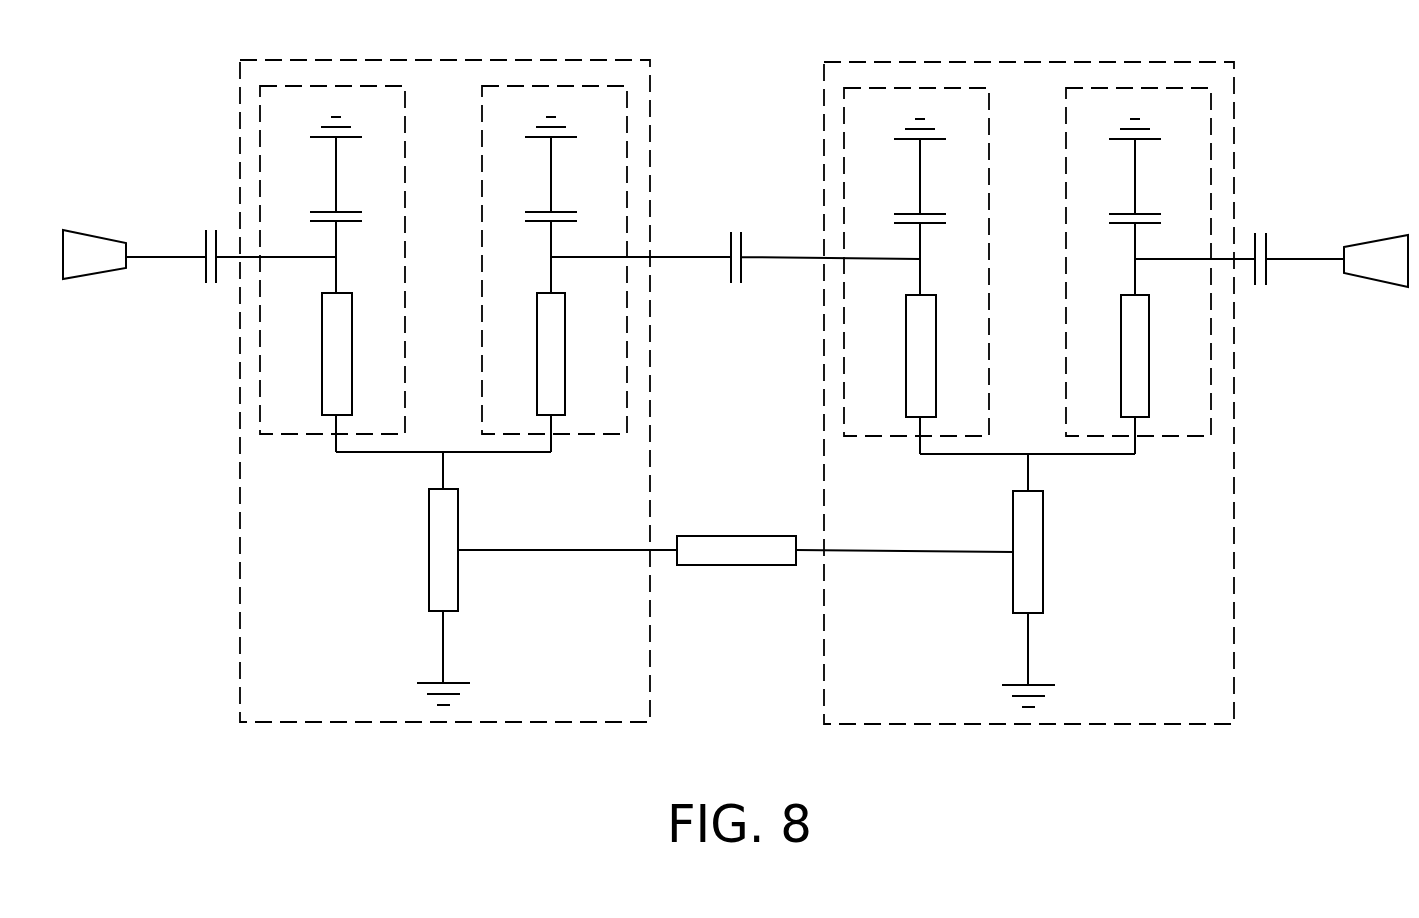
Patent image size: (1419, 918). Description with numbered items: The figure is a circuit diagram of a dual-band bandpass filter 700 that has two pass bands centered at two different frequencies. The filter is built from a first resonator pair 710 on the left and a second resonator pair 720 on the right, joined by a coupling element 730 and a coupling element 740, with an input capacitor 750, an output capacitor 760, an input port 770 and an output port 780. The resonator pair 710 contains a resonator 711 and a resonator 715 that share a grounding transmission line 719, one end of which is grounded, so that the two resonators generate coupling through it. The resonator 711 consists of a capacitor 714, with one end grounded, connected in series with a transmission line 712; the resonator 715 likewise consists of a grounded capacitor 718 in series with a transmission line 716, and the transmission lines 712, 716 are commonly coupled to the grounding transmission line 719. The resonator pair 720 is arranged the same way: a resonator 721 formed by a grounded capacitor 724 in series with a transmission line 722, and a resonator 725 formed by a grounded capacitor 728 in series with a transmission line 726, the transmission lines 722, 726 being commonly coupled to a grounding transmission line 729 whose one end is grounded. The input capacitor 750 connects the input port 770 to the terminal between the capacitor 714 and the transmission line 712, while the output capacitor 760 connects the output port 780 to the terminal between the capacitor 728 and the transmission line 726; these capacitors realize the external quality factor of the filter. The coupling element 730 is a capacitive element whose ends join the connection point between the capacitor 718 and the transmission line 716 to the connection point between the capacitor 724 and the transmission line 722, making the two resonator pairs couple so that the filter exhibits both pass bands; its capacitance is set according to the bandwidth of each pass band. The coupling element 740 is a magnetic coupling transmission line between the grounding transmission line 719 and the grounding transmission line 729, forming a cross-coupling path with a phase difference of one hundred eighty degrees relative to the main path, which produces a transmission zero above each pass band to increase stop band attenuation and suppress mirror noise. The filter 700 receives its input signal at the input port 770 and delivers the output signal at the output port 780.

The dual-band bandpass filter 700 is at (1282, 772).
The resonator pair 710 is at (449, 60).
The resonator 711 is at (260, 86).
The transmission line 712 is at (322, 395).
The capacitor 714 is at (325, 211).
The resonator 715 is at (627, 86).
The transmission line 716 is at (565, 395).
The capacitor 718 is at (565, 212).
The grounding transmission line 719 is at (429, 549).
The resonator pair 720 is at (1033, 62).
The resonator 721 is at (844, 88).
The transmission line 722 is at (906, 396).
The capacitor 724 is at (908, 213).
The resonator 725 is at (1211, 88).
The transmission line 726 is at (1149, 397).
The capacitor 728 is at (1150, 214).
The grounding transmission line 729 is at (1043, 551).
The coupling element 730 is at (742, 276).
The coupling element 740 is at (732, 536).
The input capacitor 750 is at (202, 270).
The output capacitor 760 is at (1268, 276).
The input port 770 is at (99, 236).
The output port 780 is at (1374, 246).